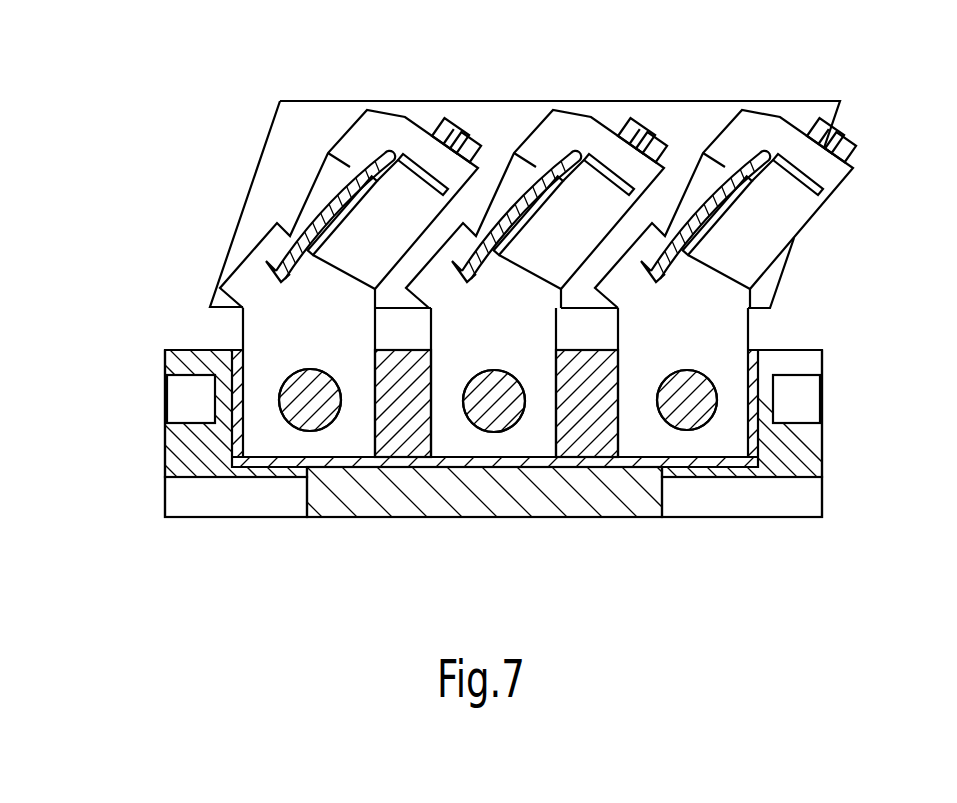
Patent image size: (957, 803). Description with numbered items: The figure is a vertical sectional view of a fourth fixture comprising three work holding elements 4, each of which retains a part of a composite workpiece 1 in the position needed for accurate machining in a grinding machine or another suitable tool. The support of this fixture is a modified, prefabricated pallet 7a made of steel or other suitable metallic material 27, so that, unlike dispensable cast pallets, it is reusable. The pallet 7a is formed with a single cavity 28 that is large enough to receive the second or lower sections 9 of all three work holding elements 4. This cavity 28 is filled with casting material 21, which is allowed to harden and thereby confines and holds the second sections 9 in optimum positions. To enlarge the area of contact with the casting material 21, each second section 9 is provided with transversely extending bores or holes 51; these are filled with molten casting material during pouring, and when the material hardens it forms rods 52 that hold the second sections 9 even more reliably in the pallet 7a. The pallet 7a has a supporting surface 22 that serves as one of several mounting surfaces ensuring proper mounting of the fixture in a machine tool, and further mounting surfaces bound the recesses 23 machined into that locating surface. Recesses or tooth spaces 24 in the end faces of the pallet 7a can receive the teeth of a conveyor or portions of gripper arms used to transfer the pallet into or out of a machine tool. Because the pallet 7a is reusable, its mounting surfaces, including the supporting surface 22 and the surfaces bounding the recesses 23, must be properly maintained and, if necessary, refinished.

The composite workpiece 1 is at (325, 93).
The work holding element 4 is at (236, 330).
The pallet 7a is at (830, 429).
The second section 9 is at (347, 447).
The casting material 21 is at (604, 451).
The supporting surface 22 is at (406, 523).
The recess 23 is at (242, 500).
The recess 24 is at (186, 398).
The metallic material 27 is at (785, 458).
The cavity 28 is at (600, 458).
The bore 51 is at (295, 363).
The rod 52 is at (325, 387).